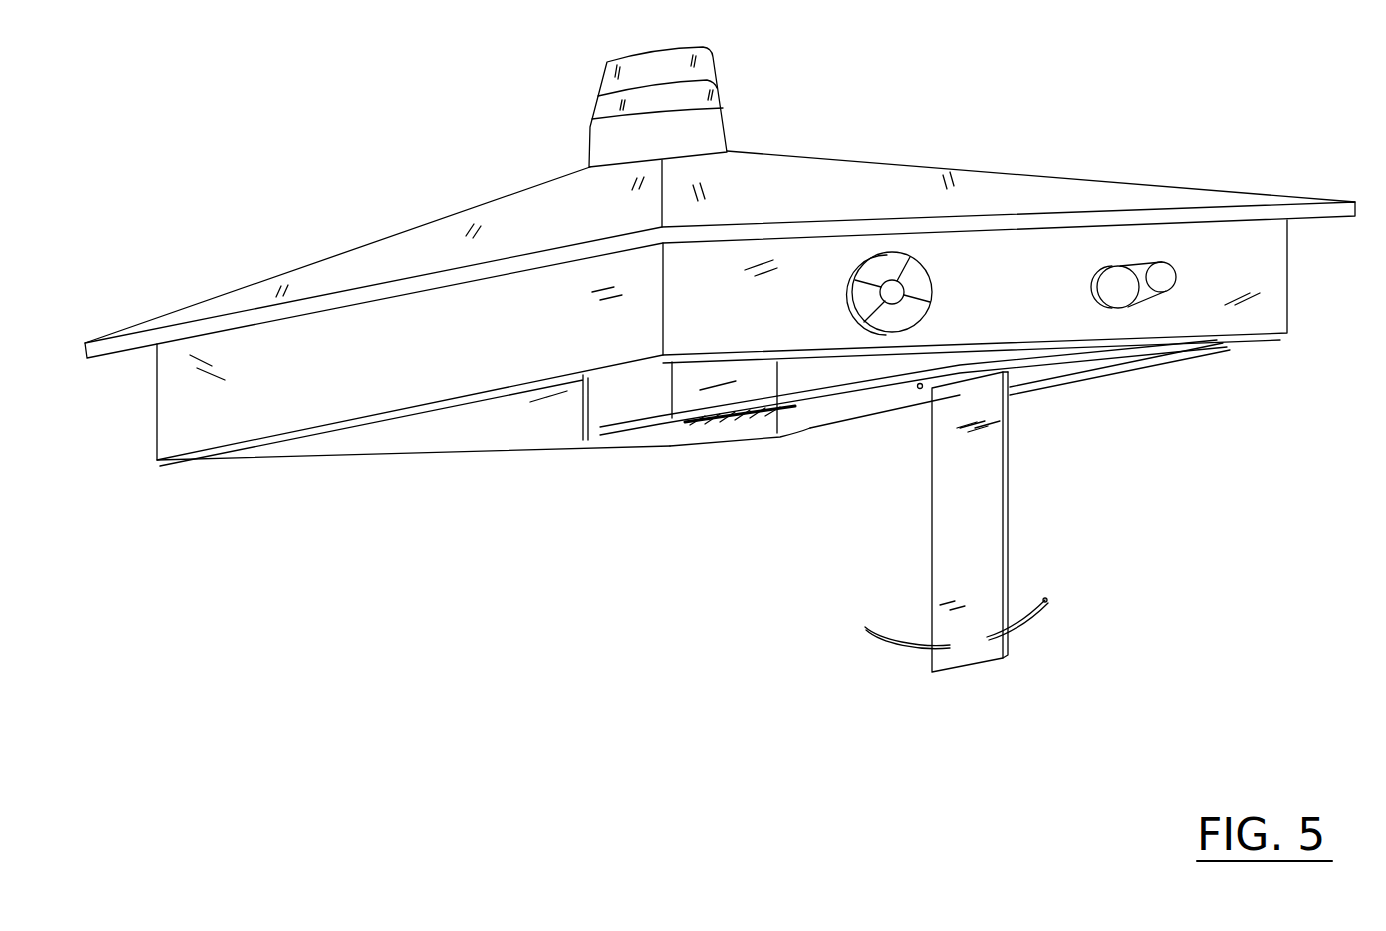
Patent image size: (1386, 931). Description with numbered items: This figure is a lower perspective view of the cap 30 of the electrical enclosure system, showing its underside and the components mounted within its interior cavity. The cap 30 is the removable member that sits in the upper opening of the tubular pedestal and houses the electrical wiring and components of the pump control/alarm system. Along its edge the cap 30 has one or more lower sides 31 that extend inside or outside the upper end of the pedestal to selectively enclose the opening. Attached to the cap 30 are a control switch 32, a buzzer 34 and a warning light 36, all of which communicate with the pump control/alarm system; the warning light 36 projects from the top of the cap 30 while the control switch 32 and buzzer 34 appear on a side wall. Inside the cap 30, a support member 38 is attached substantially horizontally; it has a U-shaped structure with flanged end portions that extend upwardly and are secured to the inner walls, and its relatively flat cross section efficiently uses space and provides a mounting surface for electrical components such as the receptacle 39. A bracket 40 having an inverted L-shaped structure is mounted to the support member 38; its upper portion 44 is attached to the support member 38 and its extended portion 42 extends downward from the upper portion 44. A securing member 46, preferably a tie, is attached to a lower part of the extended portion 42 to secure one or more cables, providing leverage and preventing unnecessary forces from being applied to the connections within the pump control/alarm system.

The cap 30 is at (995, 175).
The lower sides 31 is at (185, 428).
The control switch 32 is at (1162, 276).
The buzzer 34 is at (887, 262).
The warning light 36 is at (707, 68).
The support member 38 is at (1047, 357).
The receptacle 39 is at (735, 420).
The bracket 40 is at (918, 567).
The extended portion 42 is at (990, 497).
The upper portion 44 is at (912, 388).
The securing member 46 is at (1032, 618).